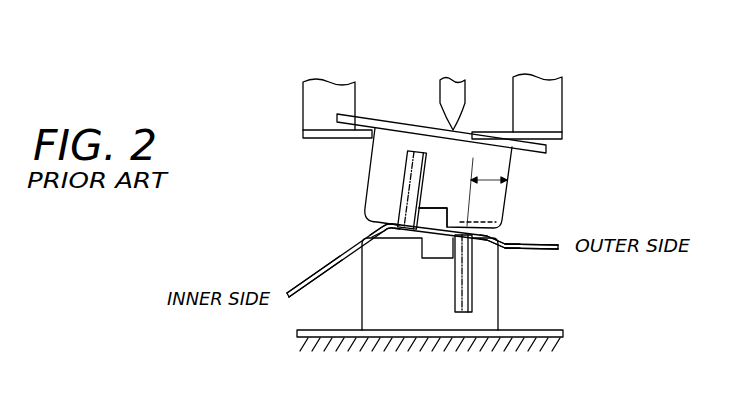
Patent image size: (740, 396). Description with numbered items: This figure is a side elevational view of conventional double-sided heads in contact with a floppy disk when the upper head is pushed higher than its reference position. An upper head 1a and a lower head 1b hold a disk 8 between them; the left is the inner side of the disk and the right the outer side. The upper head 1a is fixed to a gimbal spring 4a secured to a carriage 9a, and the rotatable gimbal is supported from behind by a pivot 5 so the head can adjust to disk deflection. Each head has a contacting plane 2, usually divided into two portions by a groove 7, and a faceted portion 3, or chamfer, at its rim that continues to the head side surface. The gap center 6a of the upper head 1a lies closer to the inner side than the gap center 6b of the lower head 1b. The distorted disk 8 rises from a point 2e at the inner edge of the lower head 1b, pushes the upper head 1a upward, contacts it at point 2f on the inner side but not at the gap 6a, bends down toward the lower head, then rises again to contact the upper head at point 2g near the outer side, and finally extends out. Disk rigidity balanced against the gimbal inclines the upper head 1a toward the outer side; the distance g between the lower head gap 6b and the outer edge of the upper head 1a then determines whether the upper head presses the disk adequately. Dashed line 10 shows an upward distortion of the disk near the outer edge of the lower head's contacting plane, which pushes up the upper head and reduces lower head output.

The upper head 1a is at (438, 147).
The lower head 1b is at (492, 318).
The contacting plane 2 is at (458, 228).
The bent portion of sheet 2e is at (362, 239).
The point of contact of the disk with the upper head 2f is at (385, 222).
The point of contact of the disk with the upper head on the outer side 2g is at (550, 241).
The faceted portion 3 is at (507, 232).
The gimbal spring 4a is at (479, 135).
The pivot 5 is at (453, 83).
The gap center of the upper head 6a is at (410, 183).
The gap center of the lower head 6b is at (465, 297).
The groove 7 is at (448, 208).
The disk 8 is at (311, 272).
The carriage 9a is at (335, 90).
The dashed line 10 is at (492, 222).
The distance g is at (502, 180).